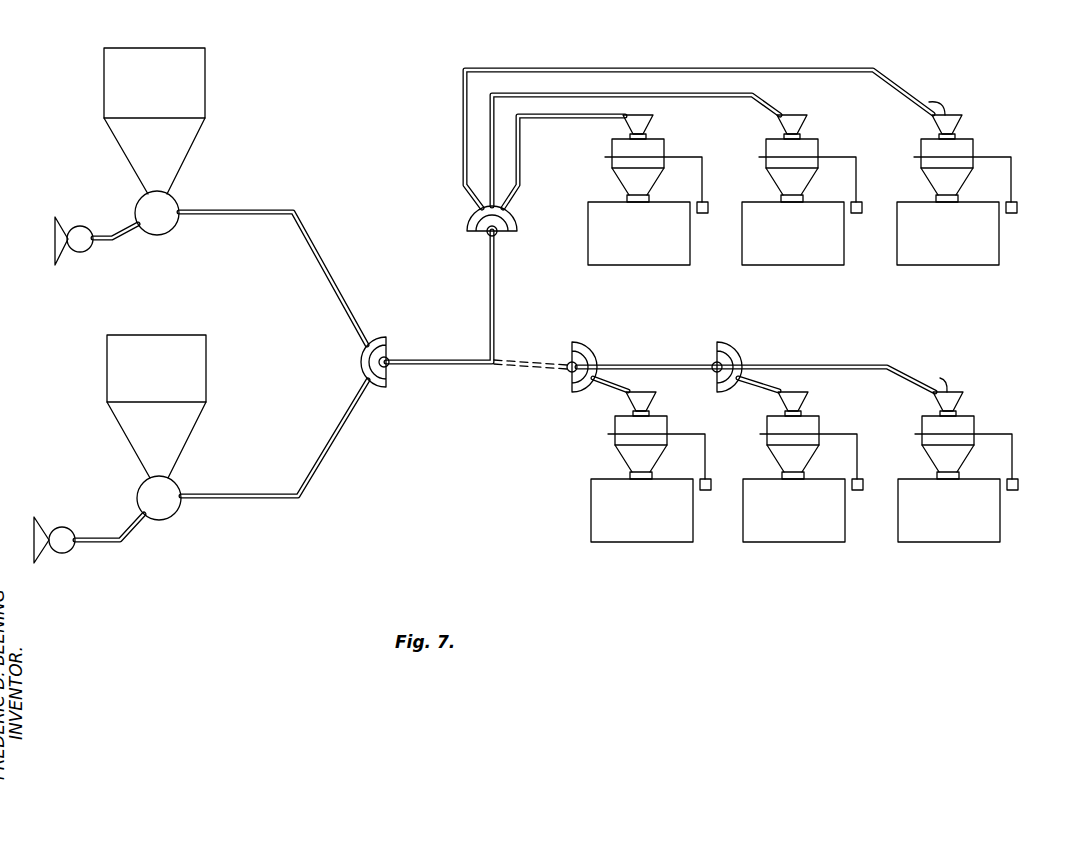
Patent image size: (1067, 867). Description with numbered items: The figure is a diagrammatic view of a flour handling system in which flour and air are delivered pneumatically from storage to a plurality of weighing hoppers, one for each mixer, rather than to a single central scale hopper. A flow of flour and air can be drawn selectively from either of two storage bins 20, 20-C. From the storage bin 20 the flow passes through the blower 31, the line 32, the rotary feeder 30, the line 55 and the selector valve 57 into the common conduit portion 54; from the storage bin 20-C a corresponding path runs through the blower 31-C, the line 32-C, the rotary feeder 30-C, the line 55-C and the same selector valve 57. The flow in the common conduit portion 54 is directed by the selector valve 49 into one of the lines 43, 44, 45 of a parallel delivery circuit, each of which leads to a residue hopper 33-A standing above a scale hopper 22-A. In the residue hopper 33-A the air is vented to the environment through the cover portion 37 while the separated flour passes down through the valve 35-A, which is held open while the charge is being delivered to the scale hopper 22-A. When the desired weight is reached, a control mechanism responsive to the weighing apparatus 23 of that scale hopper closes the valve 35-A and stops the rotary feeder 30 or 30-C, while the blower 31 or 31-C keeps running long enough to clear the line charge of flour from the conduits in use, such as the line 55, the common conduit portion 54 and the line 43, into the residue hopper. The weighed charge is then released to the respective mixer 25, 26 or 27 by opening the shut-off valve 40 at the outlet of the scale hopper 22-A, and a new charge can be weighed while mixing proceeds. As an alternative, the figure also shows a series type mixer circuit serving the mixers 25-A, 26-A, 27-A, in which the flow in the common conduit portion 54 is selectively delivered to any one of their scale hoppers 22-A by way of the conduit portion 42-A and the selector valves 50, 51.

The storage bin 20 is at (190, 130).
The storage bin 20-C is at (200, 400).
The rotary feeder 30 is at (168, 210).
The rotary feeder 30-C is at (175, 490).
The blower 31 is at (82, 233).
The blower 31-C is at (62, 530).
The line 32 is at (122, 240).
The line 32-C is at (100, 545).
The line 55 is at (262, 210).
The line 55-C is at (312, 496).
The selector valve 57 is at (390, 345).
The common conduit portion 54 is at (458, 360).
The selector valve 49 is at (470, 228).
The line 43 is at (550, 68).
The line 44 is at (680, 96).
The line 45 is at (570, 120).
The conduit portion 42-A is at (525, 372).
The selector valve 50 is at (582, 345).
The selector valve 51 is at (765, 330).
The residue hopper 33-A is at (652, 120).
The valve 35-A is at (648, 137).
The scale hopper 22-A is at (612, 172).
The weighing apparatus 23 is at (702, 165).
The shut-off valve 40 is at (630, 198).
The cover portion 37 is at (948, 100).
The mixer 25 is at (610, 250).
The mixer 26 is at (780, 255).
The mixer 27 is at (945, 252).
The mixer 25-A is at (608, 530).
The mixer 26-A is at (770, 530).
The mixer 27-A is at (928, 532).